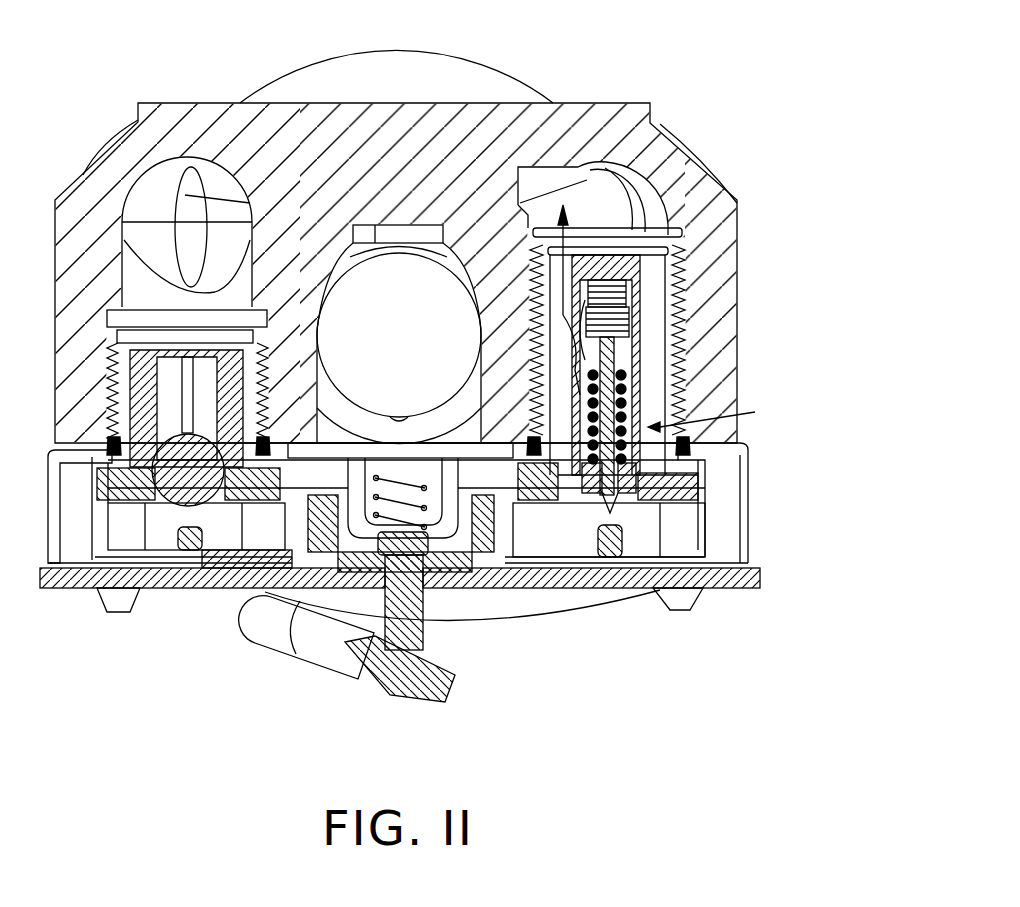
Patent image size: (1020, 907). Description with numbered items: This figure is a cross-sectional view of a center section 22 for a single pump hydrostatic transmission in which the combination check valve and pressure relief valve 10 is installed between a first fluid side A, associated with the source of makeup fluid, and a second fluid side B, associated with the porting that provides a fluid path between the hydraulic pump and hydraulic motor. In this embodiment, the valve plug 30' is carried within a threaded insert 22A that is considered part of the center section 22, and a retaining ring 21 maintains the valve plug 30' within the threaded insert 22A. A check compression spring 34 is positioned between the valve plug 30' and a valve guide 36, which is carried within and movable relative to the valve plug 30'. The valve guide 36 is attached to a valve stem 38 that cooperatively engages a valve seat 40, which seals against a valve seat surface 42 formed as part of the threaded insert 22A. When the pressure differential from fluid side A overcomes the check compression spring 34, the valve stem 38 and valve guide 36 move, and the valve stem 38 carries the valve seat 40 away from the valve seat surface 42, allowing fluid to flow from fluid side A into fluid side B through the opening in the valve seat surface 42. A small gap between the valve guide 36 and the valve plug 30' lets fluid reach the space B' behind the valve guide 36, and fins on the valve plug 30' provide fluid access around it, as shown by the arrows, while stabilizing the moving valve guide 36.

The combination check valve and pressure relief valve 10 is at (705, 445).
The retaining ring 21 is at (712, 185).
The center section 22 is at (618, 103).
The threaded insert 22A is at (680, 523).
The valve plug 30' is at (690, 316).
The check compression spring 34 is at (630, 283).
The valve guide 36 is at (655, 378).
The valve stem 38 is at (625, 335).
The valve seat 40 is at (705, 490).
The valve seat surface 42 is at (592, 497).
The first fluid side A is at (642, 520).
The second fluid side B is at (672, 252).
The space behind the valve guide B' is at (708, 282).